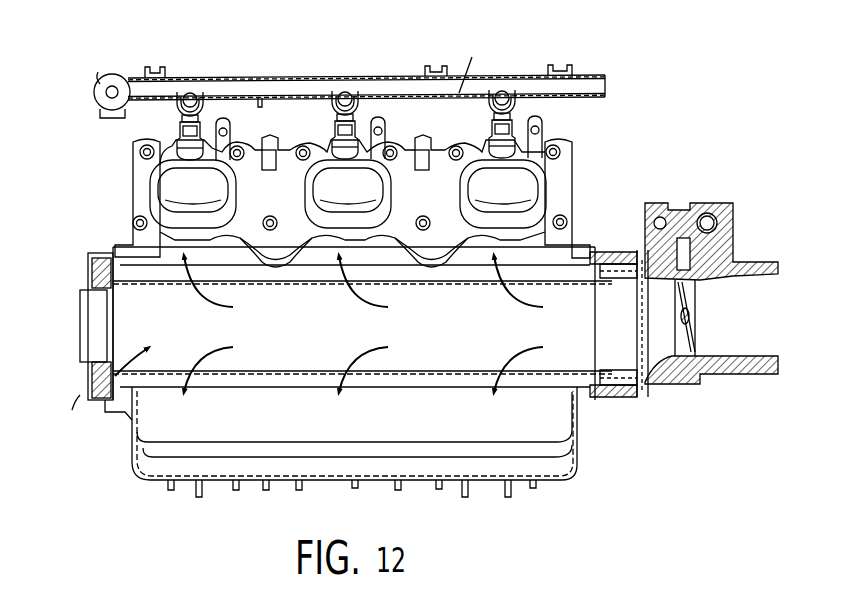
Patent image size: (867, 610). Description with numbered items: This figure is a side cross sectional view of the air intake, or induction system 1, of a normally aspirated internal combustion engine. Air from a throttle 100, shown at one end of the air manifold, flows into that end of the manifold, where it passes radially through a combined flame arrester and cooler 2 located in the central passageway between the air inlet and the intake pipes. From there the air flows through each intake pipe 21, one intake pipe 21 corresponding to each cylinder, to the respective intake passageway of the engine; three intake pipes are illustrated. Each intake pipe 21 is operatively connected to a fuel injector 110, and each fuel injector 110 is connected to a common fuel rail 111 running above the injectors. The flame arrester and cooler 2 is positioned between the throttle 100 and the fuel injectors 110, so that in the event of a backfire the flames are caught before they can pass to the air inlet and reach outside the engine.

The induction system 1 is at (560, 497).
The combined flame arrester and cooler 2 is at (103, 390).
The intake pipe 21 is at (176, 192).
The throttle 100 is at (700, 380).
The fuel injector 110 is at (208, 74).
The fuel rail 111 is at (97, 76).